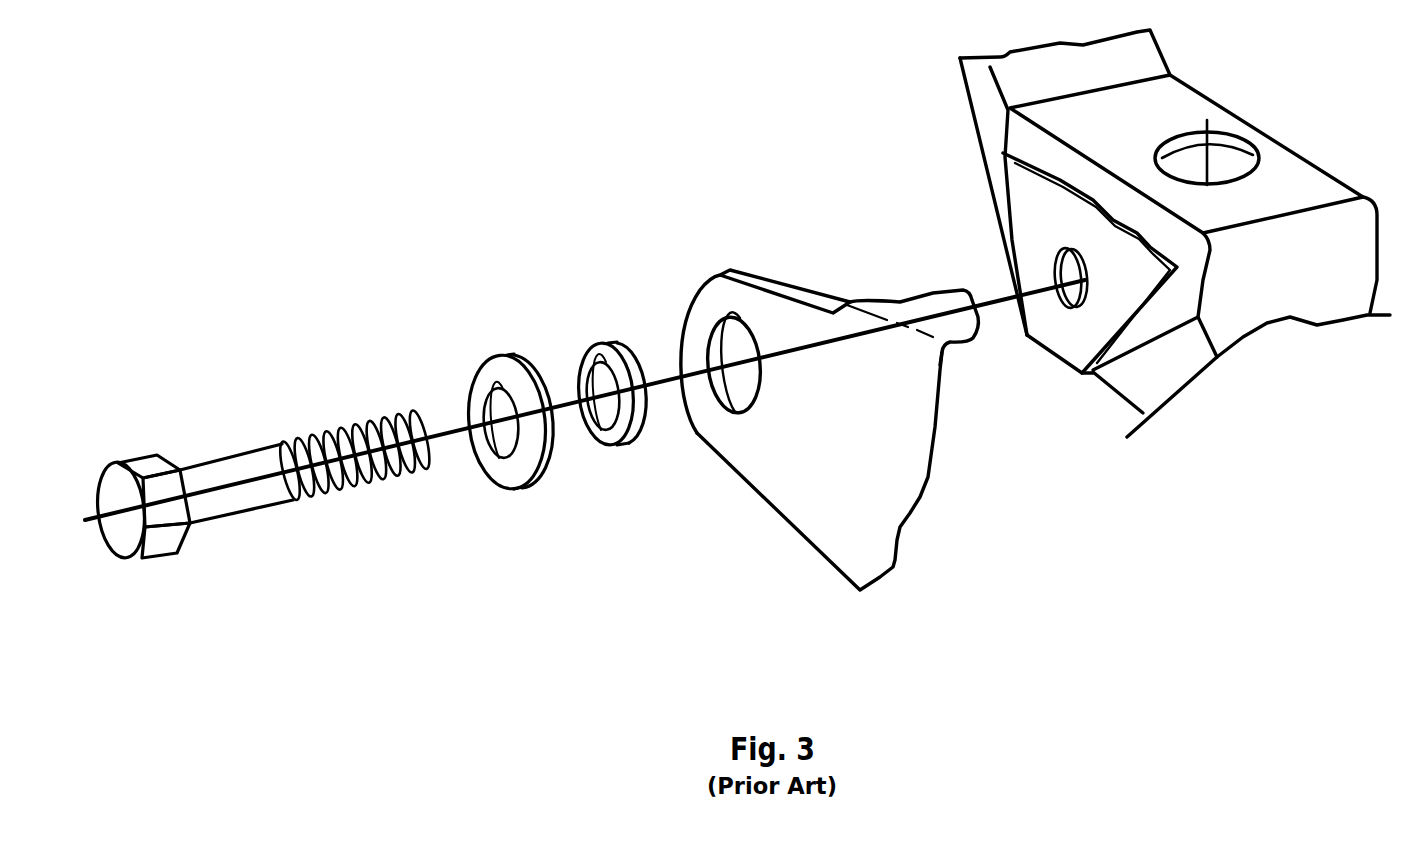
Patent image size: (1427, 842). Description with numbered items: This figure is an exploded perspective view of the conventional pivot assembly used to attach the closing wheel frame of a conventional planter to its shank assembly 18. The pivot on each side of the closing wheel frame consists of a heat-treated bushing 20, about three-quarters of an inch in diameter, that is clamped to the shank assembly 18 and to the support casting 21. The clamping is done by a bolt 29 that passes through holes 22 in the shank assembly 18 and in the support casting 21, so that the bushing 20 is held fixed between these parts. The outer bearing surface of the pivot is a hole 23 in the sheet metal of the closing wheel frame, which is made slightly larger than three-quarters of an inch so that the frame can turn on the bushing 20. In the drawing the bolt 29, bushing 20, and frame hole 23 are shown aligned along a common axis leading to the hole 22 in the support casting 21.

The shank assembly 18 is at (1013, 253).
The bushing 20 is at (605, 447).
The support casting 21 is at (1162, 233).
The holes 22 is at (1060, 297).
The hole 23 is at (762, 387).
The bolt 29 is at (230, 463).